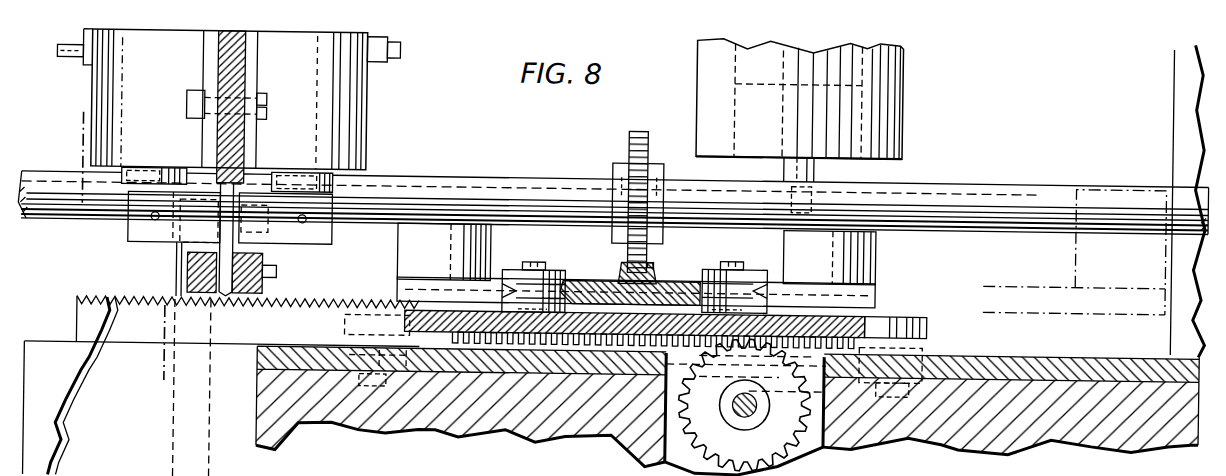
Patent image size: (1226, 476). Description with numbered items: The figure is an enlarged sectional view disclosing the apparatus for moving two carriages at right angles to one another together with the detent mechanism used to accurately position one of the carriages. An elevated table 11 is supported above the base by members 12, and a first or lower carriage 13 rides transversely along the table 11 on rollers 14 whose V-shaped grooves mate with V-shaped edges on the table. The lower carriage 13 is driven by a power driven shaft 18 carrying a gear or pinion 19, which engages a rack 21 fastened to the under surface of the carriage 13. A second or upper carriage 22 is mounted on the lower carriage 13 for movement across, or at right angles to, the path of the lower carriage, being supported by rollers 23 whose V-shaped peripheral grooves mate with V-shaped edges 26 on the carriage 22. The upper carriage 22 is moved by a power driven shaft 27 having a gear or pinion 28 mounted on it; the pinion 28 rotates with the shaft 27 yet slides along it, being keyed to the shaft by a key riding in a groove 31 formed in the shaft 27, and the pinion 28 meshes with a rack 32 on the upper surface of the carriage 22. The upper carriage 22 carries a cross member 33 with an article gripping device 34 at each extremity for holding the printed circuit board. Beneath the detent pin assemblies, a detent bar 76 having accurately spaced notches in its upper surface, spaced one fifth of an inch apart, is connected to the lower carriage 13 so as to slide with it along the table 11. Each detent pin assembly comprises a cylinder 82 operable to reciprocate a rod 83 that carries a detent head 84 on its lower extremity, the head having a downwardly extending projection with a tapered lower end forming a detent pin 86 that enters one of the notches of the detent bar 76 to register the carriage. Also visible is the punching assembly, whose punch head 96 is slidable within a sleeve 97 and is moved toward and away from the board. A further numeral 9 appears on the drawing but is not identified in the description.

The section line 9- 9 is at (80, 133).
The base 11 is at (1018, 356).
The frame break line 12 is at (437, 423).
The rack bar 13 is at (893, 316).
The bracket 14 is at (345, 347).
The pinion gear 18 is at (738, 413).
The gear cavity 19 is at (707, 439).
The rack teeth 21 is at (537, 339).
The belt strip 22 is at (580, 284).
The pulley 23 is at (512, 273).
The pin 26 is at (673, 268).
The shaft end 27 is at (1054, 186).
The gear 28 is at (627, 137).
The shaft 31 is at (551, 186).
The arm 32 is at (650, 264).
The guide bar 33 is at (870, 294).
The bearing block 34 is at (407, 261).
The toothed rack 76 is at (88, 330).
The drum 82 is at (109, 100).
The bearing 83 is at (272, 193).
The carriage block 84 is at (129, 250).
The pin 86 is at (225, 292).
The shaft stub 96 is at (807, 174).
The drum 97 is at (893, 113).